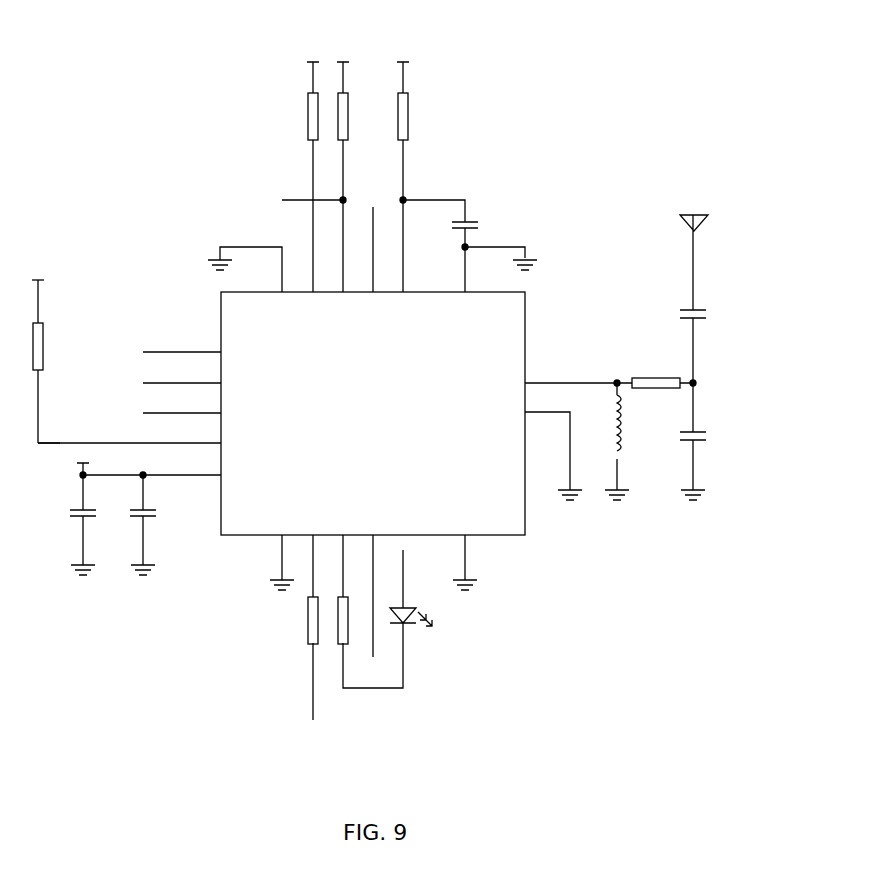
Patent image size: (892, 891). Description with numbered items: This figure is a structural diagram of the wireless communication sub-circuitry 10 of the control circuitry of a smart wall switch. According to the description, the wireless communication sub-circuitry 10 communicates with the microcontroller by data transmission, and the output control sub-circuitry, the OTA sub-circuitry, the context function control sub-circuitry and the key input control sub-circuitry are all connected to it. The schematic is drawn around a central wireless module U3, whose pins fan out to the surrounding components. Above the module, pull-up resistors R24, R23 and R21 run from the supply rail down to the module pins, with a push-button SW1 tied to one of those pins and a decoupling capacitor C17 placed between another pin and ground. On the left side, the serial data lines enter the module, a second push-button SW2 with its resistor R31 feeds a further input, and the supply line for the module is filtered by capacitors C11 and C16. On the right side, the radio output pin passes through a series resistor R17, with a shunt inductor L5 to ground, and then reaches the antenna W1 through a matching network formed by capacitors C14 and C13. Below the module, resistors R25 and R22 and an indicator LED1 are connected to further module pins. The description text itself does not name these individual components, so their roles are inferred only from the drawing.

The wireless communication sub-circuitry 10 is at (114, 80).
The ZM5202-AU module U3 is at (373, 416).
The resistor R24 is at (301, 116).
The resistor R23 is at (353, 116).
The resistor R21 is at (413, 116).
The switch SW1 is at (307, 194).
The capacitor C17 is at (479, 230).
The switch SW2 is at (52, 434).
The resistor R31 is at (27, 346).
The capacitor C11 is at (96, 518).
The capacitor C16 is at (157, 518).
The resistor R17 is at (656, 384).
The inductor L5 is at (631, 436).
The antenna W1 is at (694, 256).
The capacitor C14 is at (705, 320).
The capacitor C13 is at (707, 442).
The resistor R25 is at (323, 620).
The resistor R22 is at (353, 620).
The LED LED1 is at (426, 611).